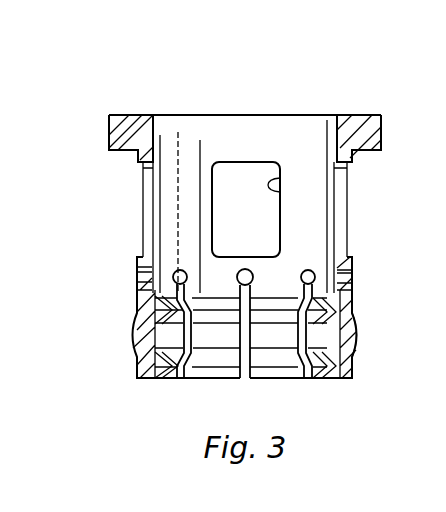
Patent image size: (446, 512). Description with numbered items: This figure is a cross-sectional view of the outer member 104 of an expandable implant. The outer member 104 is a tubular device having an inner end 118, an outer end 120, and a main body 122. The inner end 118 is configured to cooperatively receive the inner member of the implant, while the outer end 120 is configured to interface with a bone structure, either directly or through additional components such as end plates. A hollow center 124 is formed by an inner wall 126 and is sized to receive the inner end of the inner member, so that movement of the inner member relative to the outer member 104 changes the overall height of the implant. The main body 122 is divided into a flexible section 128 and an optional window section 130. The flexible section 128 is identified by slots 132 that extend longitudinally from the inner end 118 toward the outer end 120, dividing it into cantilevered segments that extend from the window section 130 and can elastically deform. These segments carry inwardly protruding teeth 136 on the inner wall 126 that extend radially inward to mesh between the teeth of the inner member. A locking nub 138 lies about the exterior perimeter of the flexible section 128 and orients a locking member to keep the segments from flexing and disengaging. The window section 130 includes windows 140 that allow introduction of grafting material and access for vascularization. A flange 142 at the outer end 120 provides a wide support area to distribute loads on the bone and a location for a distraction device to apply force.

The outer member 104 is at (242, 79).
The inner end 118 is at (345, 382).
The outer end 120 is at (357, 113).
The main body 122 is at (357, 297).
The hollow center 124 is at (228, 152).
The inner wall 126 is at (160, 115).
The flexible section 128 is at (100, 262).
The window section 130 is at (100, 115).
The slots 132 is at (253, 345).
The inwardly protruding teeth 136 is at (217, 303).
The locking nub 138 is at (360, 337).
The windows 140 is at (342, 207).
The flange 142 is at (383, 132).